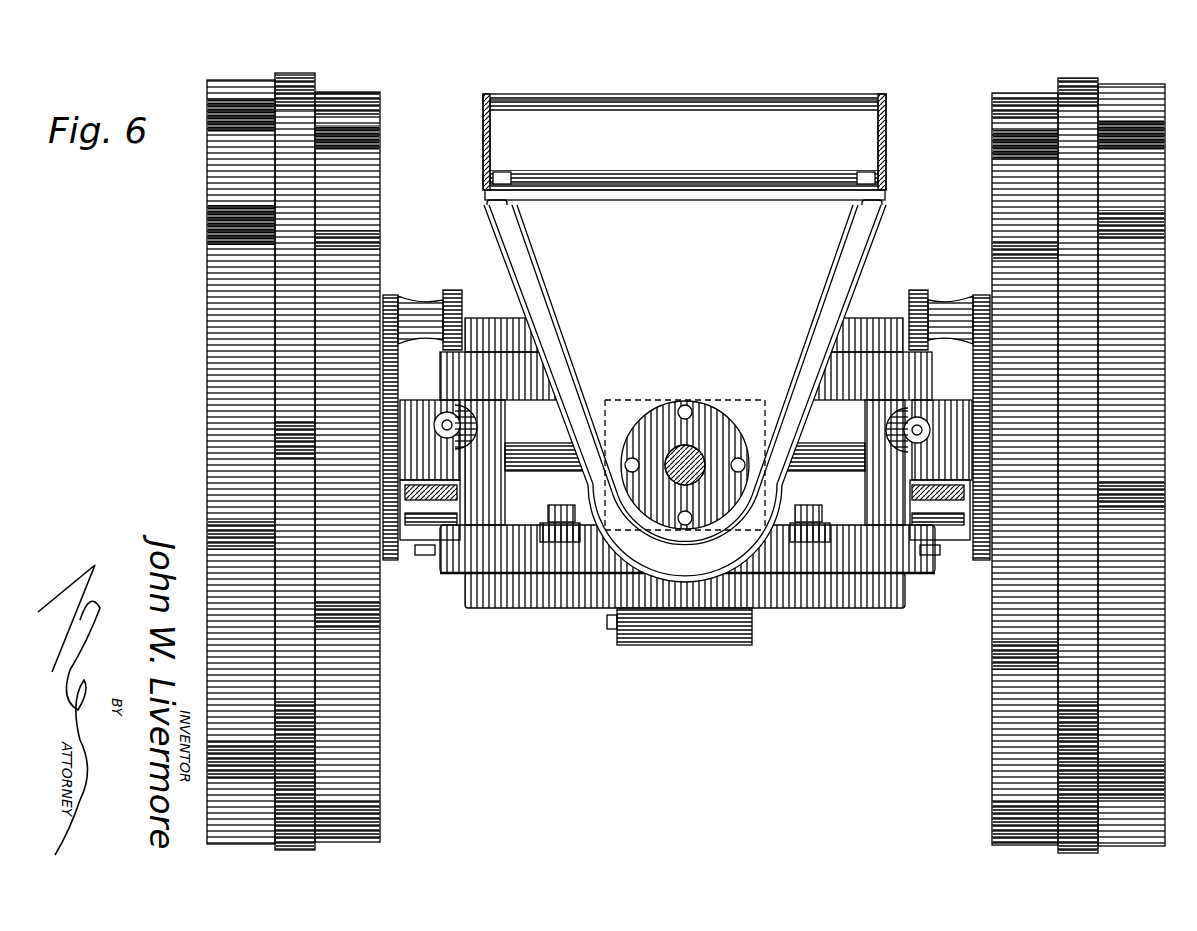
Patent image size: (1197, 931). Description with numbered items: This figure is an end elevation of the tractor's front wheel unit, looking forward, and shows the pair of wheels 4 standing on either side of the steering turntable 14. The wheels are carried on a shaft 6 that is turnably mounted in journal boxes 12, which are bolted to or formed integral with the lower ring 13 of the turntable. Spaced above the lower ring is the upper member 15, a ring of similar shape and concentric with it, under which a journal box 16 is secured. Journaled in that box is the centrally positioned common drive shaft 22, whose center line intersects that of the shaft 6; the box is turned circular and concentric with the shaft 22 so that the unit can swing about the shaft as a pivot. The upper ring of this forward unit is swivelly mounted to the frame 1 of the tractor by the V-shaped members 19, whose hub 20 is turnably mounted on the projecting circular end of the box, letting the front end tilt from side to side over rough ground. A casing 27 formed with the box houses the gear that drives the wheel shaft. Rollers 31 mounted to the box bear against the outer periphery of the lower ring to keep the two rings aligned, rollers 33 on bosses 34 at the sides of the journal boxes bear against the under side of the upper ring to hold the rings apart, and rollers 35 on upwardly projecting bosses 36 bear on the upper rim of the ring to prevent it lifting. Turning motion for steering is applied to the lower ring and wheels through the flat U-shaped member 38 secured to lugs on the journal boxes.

The frame 1 is at (668, 186).
The wheels 4 is at (352, 150).
The shaft 6 is at (530, 472).
The journal boxes 12 is at (473, 505).
The lower ring 13 is at (478, 598).
The turntable 14 is at (850, 608).
The upper member 15 is at (866, 318).
The journal box 16 is at (730, 446).
The V-shaped members 19 is at (540, 284).
The hub 20 is at (718, 400).
The common drive shaft 22 is at (672, 457).
The casing 27 is at (680, 296).
The rollers 31 is at (565, 535).
The rollers 33 is at (922, 400).
The bosses 34 is at (445, 420).
The rollers 35 is at (452, 292).
The bosses 36 is at (958, 300).
The U-shaped member 38 is at (428, 498).